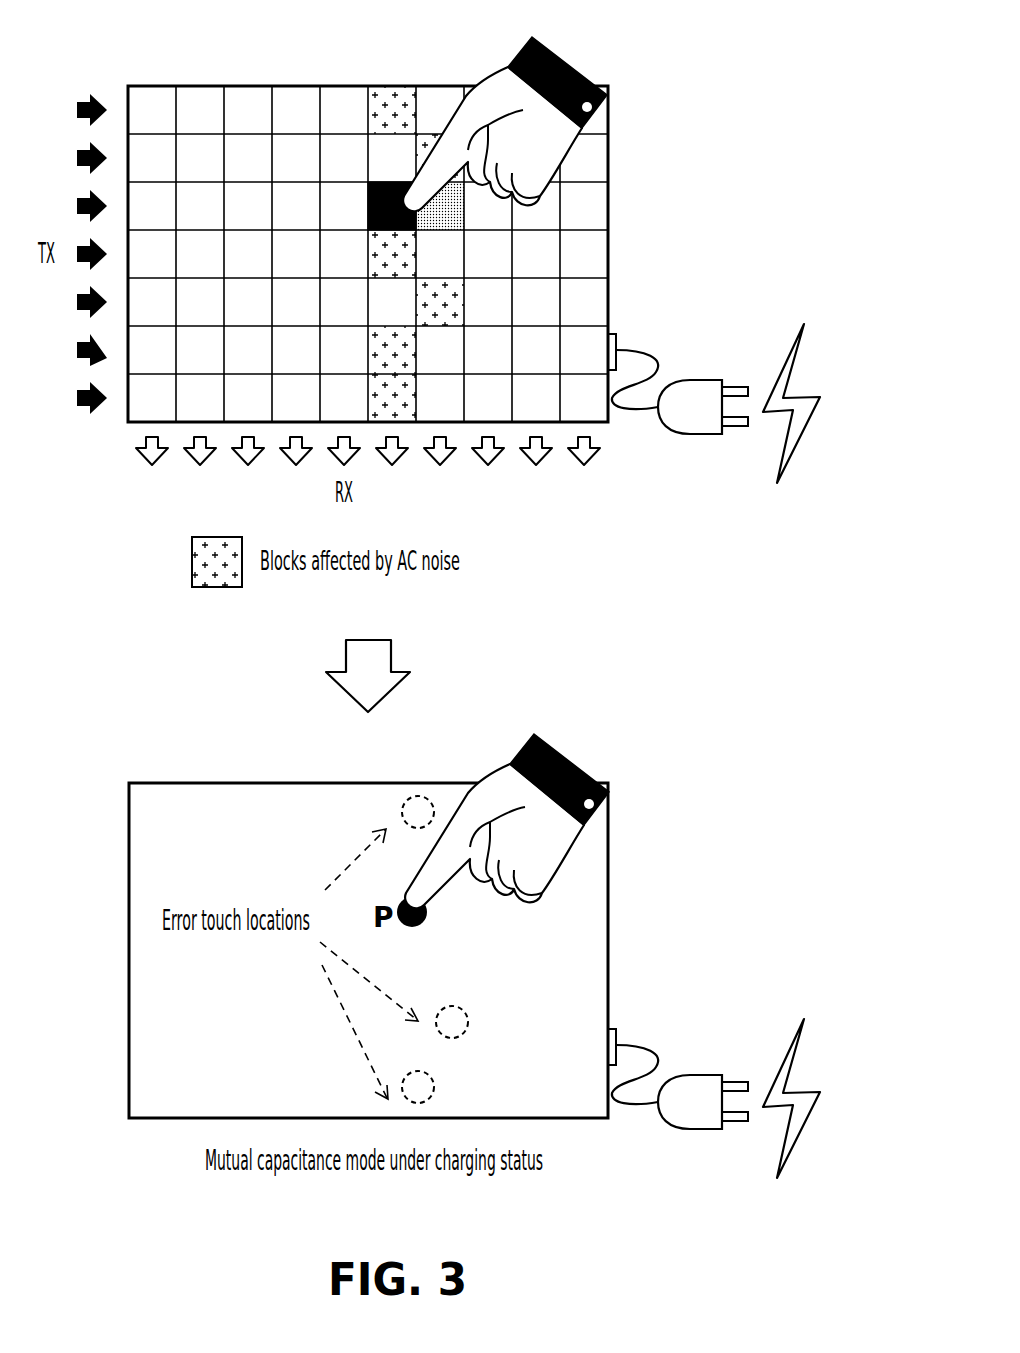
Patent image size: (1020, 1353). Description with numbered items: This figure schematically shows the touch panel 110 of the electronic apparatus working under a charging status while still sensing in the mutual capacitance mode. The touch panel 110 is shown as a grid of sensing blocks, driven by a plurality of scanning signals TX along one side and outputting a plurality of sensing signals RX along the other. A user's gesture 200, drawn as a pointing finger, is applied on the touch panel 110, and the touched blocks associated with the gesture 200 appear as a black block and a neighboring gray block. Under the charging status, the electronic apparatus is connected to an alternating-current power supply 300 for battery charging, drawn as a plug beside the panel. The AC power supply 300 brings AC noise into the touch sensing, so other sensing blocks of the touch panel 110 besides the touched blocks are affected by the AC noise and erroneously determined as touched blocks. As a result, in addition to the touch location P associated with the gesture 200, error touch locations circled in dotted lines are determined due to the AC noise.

The touch panel 110 is at (608, 258).
The gesture 200 is at (573, 73).
The alternating-current (AC) power supply 300 is at (703, 380).